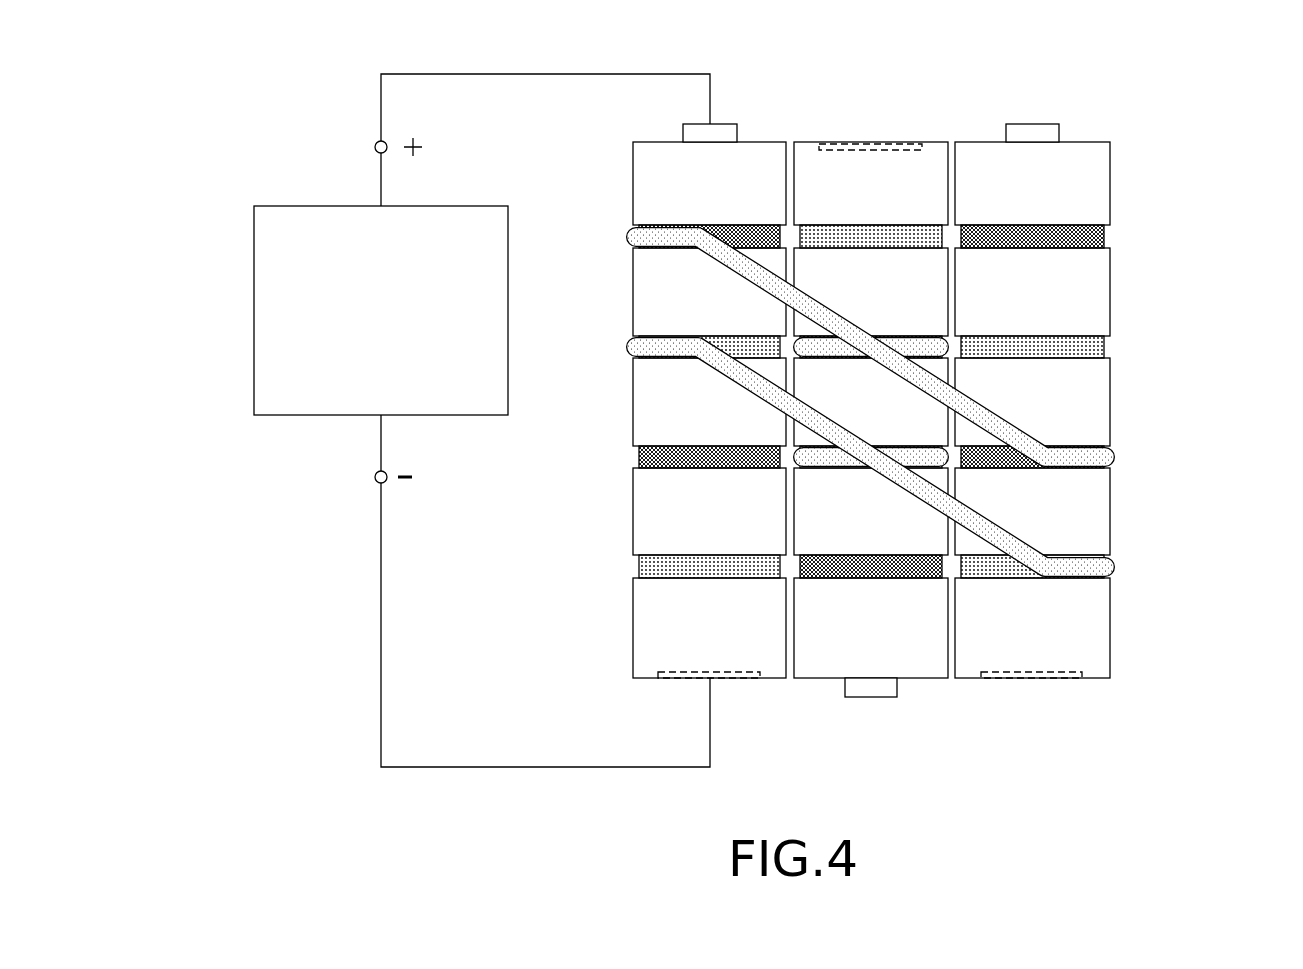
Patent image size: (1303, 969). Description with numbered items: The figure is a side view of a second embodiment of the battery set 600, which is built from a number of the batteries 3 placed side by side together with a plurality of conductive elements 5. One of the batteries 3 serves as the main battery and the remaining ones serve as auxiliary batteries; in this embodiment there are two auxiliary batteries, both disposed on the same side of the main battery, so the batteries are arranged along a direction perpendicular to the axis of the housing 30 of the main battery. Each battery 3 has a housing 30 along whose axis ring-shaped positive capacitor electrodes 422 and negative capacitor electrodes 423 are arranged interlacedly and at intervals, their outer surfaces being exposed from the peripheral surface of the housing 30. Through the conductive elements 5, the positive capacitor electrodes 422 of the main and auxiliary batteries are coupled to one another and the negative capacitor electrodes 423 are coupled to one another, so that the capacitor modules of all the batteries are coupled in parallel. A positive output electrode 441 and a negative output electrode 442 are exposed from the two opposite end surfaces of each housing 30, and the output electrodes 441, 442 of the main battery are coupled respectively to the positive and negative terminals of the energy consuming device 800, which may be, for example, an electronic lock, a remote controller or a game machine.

The battery 3 is at (889, 350).
The conductive element 5 is at (636, 236).
The housing 30 is at (640, 158).
The positive capacitor electrode 422 is at (822, 335).
The negative capacitor electrode 423 is at (722, 358).
The positive output electrode 441 is at (700, 124).
The negative output electrode 442 is at (878, 145).
The battery set 600 is at (1130, 106).
The energy consuming device 800 is at (254, 312).